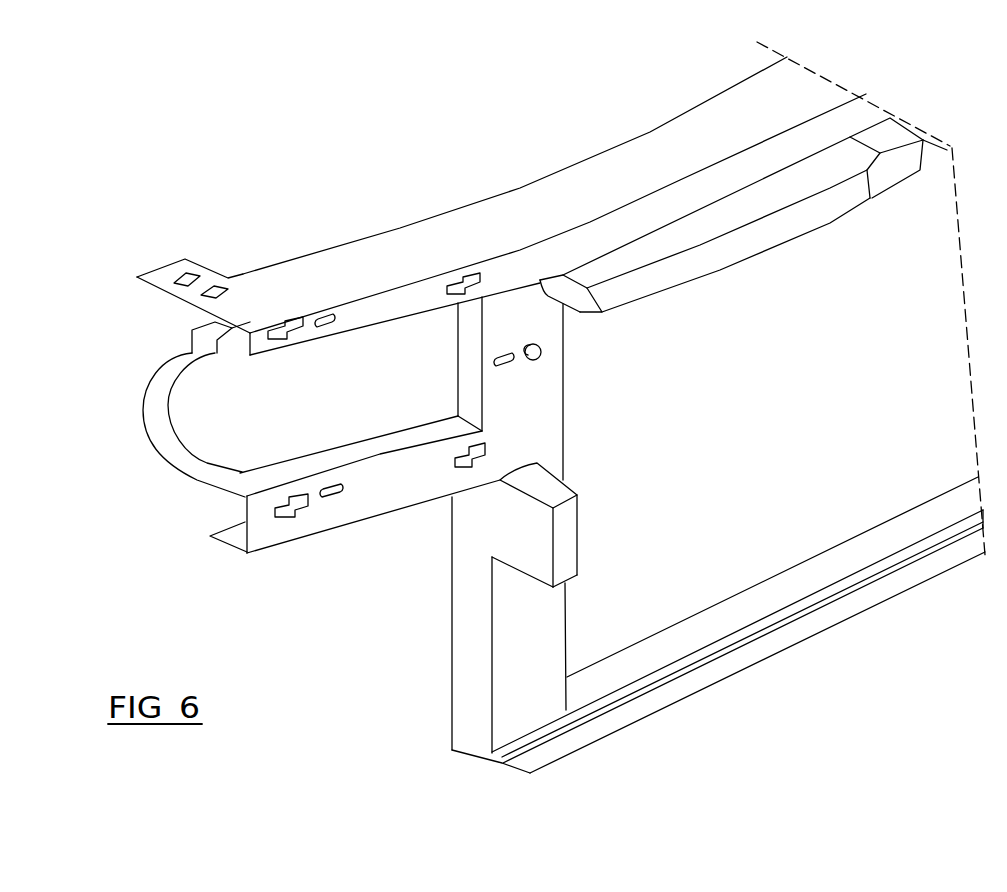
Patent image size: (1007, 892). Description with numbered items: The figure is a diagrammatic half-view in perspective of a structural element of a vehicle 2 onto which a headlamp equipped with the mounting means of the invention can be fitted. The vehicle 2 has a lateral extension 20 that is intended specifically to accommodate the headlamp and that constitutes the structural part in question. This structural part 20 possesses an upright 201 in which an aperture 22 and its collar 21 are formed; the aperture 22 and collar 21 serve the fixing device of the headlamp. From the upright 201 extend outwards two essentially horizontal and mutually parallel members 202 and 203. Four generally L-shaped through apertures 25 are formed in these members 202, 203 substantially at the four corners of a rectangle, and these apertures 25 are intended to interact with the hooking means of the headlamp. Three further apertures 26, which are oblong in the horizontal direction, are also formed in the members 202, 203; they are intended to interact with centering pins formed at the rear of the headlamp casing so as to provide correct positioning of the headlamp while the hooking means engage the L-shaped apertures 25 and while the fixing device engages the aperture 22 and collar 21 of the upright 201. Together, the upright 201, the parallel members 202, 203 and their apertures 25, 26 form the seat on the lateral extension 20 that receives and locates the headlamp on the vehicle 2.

The vehicle 2 is at (617, 172).
The lateral extension 20 is at (501, 325).
The collar 21 is at (545, 356).
The aperture 22 is at (526, 363).
The L-shaped through apertures 25 is at (290, 308).
The oblong apertures 26 is at (496, 357).
The upright 201 is at (493, 395).
The horizontal member 202 is at (386, 310).
The horizontal member 203 is at (413, 452).